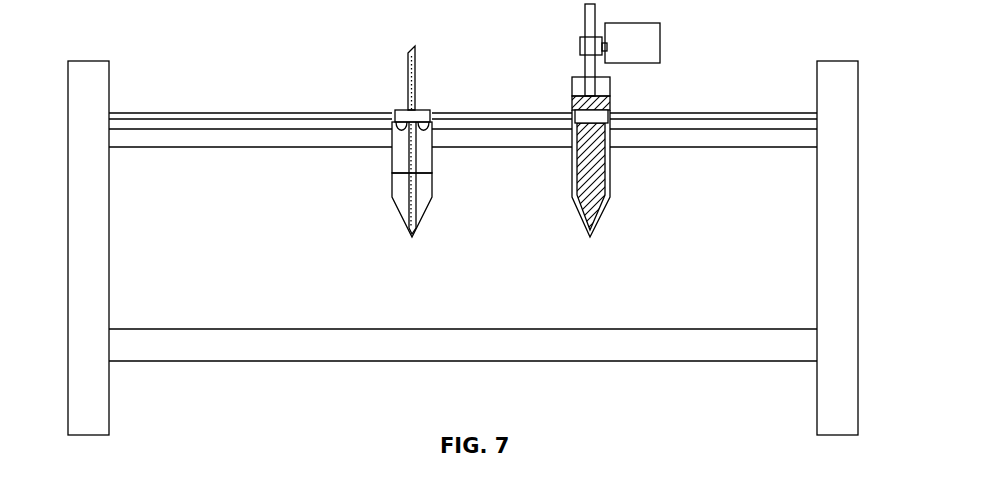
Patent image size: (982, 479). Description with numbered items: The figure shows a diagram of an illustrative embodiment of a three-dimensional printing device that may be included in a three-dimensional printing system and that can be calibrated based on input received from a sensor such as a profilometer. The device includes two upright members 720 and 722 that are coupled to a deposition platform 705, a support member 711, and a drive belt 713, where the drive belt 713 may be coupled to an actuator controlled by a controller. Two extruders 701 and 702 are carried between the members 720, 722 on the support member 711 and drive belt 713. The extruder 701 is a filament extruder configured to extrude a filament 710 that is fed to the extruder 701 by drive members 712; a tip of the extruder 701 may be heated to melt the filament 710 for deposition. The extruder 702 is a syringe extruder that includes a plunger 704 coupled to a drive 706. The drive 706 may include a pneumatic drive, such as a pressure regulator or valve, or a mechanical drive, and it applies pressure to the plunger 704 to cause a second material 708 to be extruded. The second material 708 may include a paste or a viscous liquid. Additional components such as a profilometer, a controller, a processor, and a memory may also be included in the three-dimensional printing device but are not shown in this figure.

The extruder 701 is at (350, 68).
The extruder 702 is at (546, 68).
The plunger 704 is at (598, 95).
The deposition platform 705 is at (697, 361).
The drive 706 is at (660, 43).
The second material 708 is at (605, 178).
The filament 710 is at (415, 72).
The support member 711 is at (720, 148).
The drive members 712 is at (398, 128).
The drive belt 713 is at (713, 112).
The member 720 is at (87, 61).
The member 722 is at (838, 61).